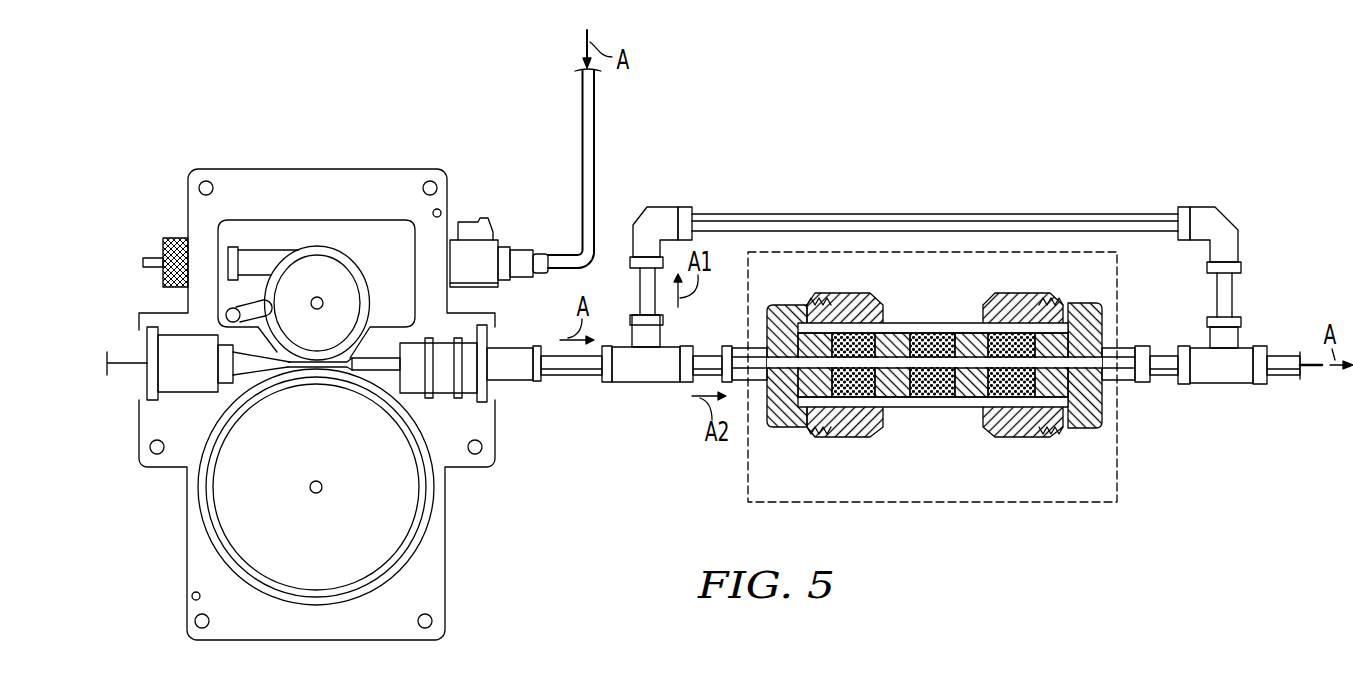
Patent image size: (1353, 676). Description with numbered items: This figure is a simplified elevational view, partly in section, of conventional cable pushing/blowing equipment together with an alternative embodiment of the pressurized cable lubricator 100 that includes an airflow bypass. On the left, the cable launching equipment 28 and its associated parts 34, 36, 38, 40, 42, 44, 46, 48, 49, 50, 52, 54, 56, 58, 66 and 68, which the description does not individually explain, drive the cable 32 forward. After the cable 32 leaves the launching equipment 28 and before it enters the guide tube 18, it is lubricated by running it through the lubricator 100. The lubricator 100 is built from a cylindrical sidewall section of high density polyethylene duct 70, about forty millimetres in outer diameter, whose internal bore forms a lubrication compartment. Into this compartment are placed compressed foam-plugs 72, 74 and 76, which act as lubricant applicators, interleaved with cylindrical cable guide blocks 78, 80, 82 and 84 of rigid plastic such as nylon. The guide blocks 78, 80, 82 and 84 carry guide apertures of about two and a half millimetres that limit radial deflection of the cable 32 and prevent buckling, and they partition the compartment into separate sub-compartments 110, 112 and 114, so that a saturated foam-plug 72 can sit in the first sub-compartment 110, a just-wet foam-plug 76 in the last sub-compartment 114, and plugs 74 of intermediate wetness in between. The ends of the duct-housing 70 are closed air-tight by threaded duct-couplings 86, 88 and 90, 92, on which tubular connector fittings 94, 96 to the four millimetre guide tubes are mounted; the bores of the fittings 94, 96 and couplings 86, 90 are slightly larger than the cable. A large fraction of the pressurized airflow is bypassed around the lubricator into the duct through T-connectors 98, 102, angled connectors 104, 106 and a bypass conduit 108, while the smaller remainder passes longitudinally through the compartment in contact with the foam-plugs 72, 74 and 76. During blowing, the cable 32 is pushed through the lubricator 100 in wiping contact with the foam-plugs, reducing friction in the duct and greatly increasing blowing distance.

The guide tube 18 is at (377, 365).
The cable launching equipment 28 is at (262, 156).
The cable 32 is at (132, 370).
The housing plate 34 is at (447, 553).
The roller 36 is at (269, 563).
The roller 38 is at (315, 268).
The lever 40 is at (243, 306).
The bracket 42 is at (250, 262).
The knob 44 is at (178, 237).
The tube segment 46 is at (240, 368).
The fitting 48 is at (186, 378).
The fitting 49 is at (447, 393).
The tube 50 is at (520, 348).
The connector 52 is at (529, 253).
The valve 54 is at (491, 250).
The hole 56 is at (433, 182).
The hole 58 is at (444, 211).
The tube 66 is at (578, 107).
The recess 68 is at (415, 282).
The duct housing 70 is at (932, 323).
The foam plug 72 is at (856, 394).
The foam plug 74 is at (946, 397).
The foam plug 76 is at (1012, 332).
The cable guide block 78 is at (812, 342).
The cable guide block 80 is at (897, 337).
The cable guide block 82 is at (972, 335).
The cable guide block 84 is at (1048, 332).
The threaded duct coupling 86 is at (778, 422).
The threaded duct coupling 88 is at (870, 435).
The threaded duct coupling 90 is at (1090, 430).
The threaded duct coupling 92 is at (1002, 436).
The tubular connector fitting 94 is at (744, 348).
The tubular connector fitting 96 is at (1132, 350).
The T-connector 98 is at (634, 369).
The cable lubricator 100 is at (1124, 283).
The T-connector 102 is at (1228, 385).
The angled connector 104 is at (660, 213).
The angled connector 106 is at (1228, 214).
The bypass conduit 108 is at (945, 213).
The sub-compartment 110 is at (845, 396).
The sub-compartment 112 is at (926, 396).
The sub-compartment 114 is at (1020, 396).